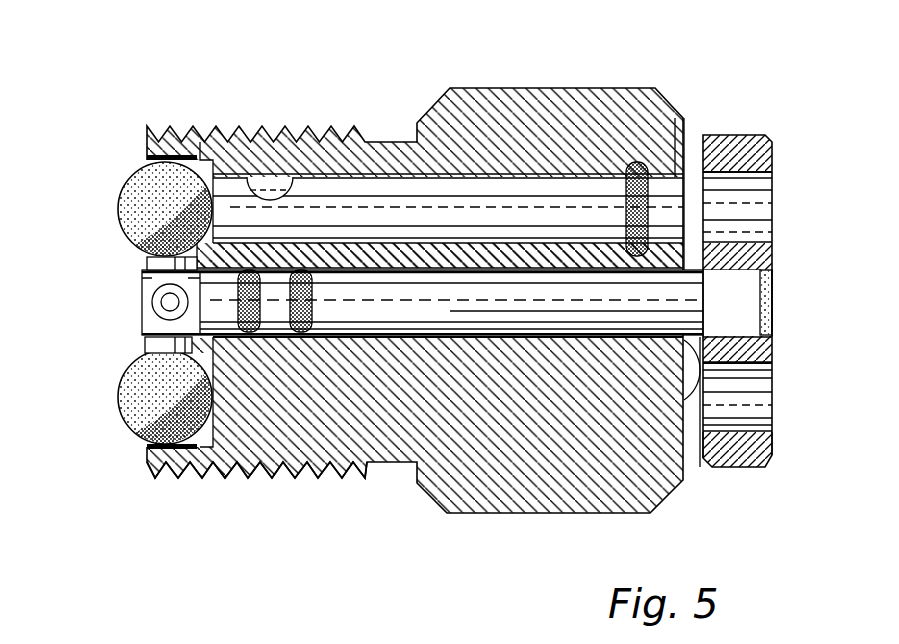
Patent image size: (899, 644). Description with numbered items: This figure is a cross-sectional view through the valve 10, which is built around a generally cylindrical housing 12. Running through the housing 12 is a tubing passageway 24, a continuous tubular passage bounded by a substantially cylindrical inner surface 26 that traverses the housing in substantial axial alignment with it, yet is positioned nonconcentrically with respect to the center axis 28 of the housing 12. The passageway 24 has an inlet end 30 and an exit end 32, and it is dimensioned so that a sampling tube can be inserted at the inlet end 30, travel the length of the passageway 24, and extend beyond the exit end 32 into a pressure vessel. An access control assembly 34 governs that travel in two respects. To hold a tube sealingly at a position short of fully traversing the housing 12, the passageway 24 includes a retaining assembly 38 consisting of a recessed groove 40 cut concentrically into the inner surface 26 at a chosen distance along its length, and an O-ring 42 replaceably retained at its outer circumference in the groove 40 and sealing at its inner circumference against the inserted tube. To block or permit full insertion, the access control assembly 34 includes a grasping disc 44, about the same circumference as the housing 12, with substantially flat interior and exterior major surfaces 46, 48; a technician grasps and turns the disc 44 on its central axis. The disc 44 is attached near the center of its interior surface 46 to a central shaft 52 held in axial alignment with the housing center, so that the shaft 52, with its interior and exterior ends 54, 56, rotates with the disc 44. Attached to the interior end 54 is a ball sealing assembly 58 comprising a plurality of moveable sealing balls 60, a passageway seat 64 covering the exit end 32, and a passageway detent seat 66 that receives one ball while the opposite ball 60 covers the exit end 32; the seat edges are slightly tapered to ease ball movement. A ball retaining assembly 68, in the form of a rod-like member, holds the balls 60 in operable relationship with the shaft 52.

The valve 10 is at (396, 54).
The housing 12 is at (413, 136).
The tubing passageway 24 is at (507, 217).
The inner surface 26 is at (262, 175).
The center axis 28 is at (735, 293).
The inlet end 30 is at (685, 203).
The exit end 32 is at (98, 205).
The access control assembly 34 is at (140, 302).
The retaining assembly 38 is at (670, 172).
The recessed groove 40 is at (650, 233).
The O-ring 42 is at (634, 165).
The grasping disc 44 is at (774, 455).
The interior major surface 46 is at (685, 468).
The exterior major surface 48 is at (775, 348).
The central shaft 52 is at (377, 277).
The interior end 54 is at (118, 334).
The exterior end 56 is at (780, 271).
The ball sealing assembly 58 is at (116, 354).
The sealing balls 60 is at (128, 180).
The passageway seat 64 is at (165, 178).
The passageway detent seat 66 is at (232, 442).
The ball retaining assembly 68 is at (150, 288).